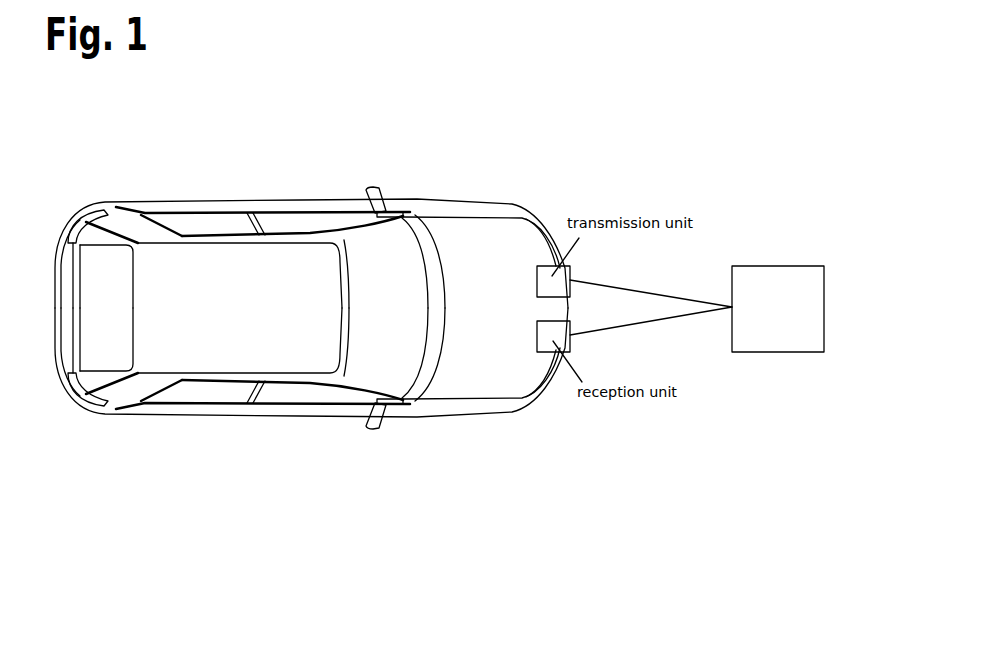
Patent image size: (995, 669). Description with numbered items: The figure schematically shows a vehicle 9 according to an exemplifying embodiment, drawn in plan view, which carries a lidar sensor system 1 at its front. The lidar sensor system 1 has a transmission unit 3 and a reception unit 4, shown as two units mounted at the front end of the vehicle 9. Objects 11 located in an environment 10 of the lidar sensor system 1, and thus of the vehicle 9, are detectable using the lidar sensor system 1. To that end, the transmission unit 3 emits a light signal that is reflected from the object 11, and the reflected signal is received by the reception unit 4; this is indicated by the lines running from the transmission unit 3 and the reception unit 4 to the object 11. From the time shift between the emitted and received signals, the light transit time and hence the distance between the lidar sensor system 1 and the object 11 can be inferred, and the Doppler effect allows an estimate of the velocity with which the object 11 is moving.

The lidar sensor system 1 is at (521, 288).
The transmission unit 3 is at (553, 273).
The reception unit 4 is at (553, 346).
The vehicle 9 is at (233, 250).
The environment 10 is at (794, 222).
The object 11 is at (776, 333).